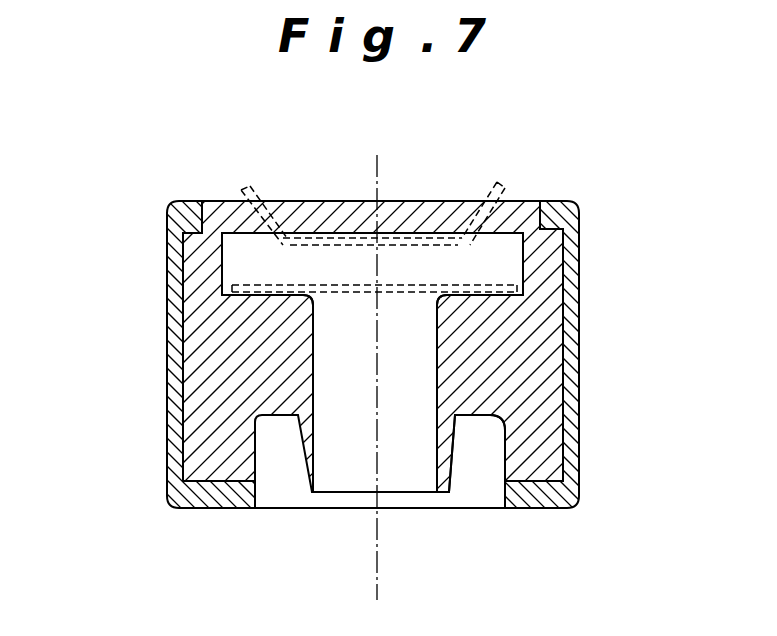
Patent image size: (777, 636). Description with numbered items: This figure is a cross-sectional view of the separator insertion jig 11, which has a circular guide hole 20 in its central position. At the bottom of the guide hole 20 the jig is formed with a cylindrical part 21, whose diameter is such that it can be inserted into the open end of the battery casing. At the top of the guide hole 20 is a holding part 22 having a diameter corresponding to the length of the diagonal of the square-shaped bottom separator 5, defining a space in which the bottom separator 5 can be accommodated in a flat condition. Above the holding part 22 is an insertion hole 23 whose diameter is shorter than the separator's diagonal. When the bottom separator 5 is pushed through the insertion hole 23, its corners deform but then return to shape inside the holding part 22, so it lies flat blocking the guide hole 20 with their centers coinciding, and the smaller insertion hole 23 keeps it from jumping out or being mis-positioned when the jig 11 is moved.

The separator insertion jig 11 is at (150, 213).
The guide hole 20 is at (445, 378).
The holding part 22 is at (523, 265).
The cylindrical part 21 is at (462, 450).
The bottom separator 5 is at (262, 256).
The insertion hole 23 is at (478, 210).